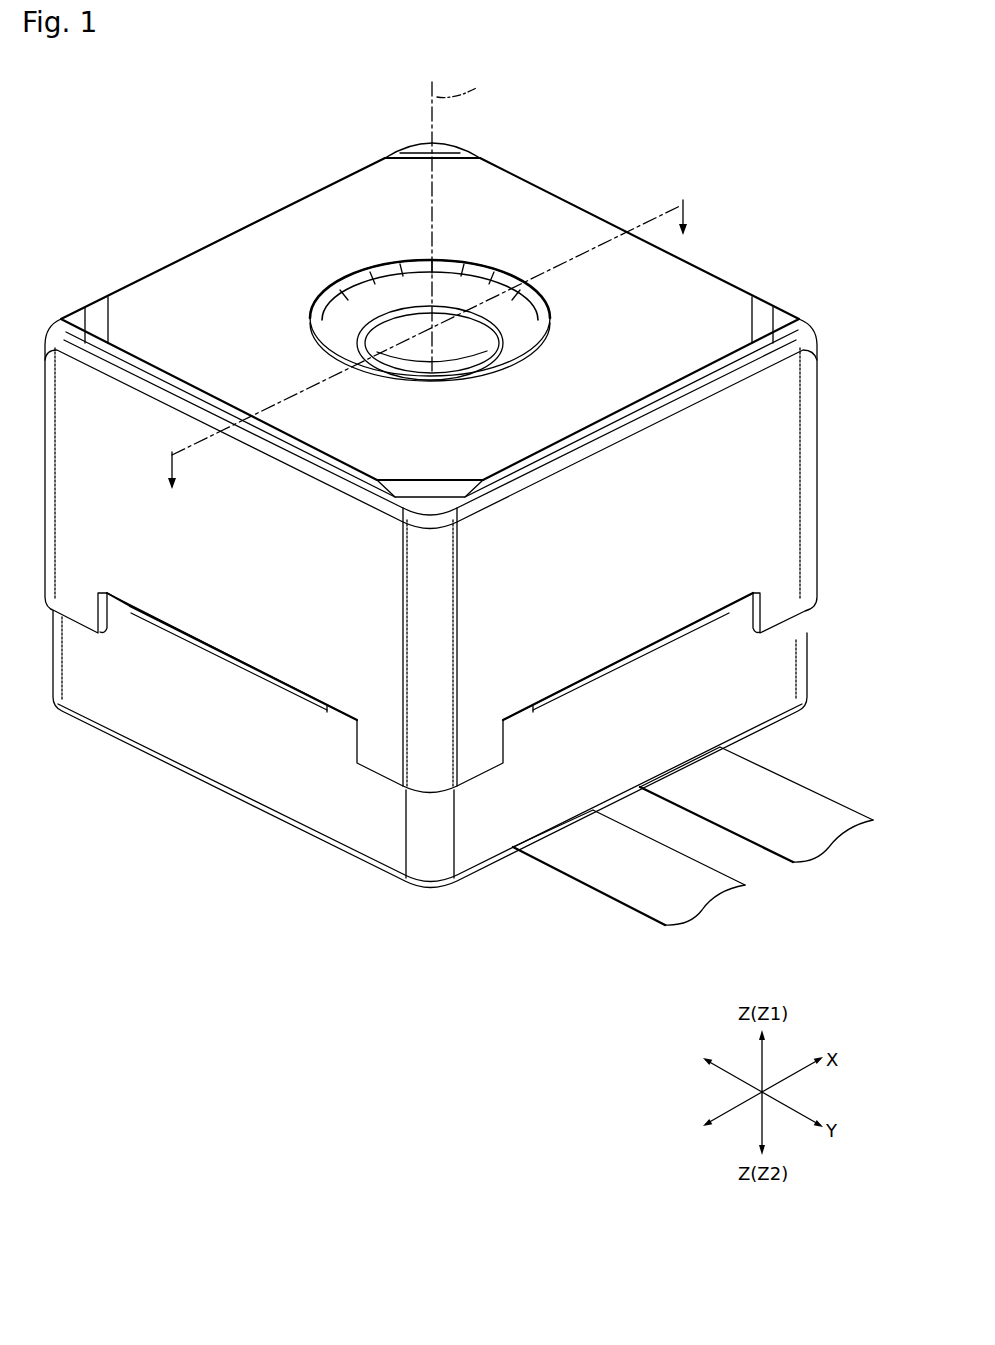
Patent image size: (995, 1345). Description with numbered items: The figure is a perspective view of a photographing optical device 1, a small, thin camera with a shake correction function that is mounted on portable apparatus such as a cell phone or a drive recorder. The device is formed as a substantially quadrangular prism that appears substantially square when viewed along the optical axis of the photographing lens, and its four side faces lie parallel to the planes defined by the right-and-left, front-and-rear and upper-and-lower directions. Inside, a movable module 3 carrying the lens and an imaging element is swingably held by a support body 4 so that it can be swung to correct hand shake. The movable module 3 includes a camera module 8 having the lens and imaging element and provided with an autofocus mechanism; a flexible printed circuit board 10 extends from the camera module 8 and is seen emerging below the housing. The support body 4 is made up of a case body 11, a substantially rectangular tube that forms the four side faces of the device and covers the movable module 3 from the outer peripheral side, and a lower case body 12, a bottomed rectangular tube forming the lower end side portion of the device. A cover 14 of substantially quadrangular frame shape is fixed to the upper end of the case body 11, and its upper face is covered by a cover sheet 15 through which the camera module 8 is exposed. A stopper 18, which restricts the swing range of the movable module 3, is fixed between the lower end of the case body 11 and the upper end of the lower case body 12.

The photographing optical device 1 is at (459, 506).
The movable module 3 is at (430, 254).
The camera module 8 is at (362, 303).
The support body 4 is at (430, 759).
The case body 11 is at (430, 759).
The flexible printed circuit board 10 is at (600, 892).
The lower case body 12 is at (168, 760).
The cover 14 is at (431, 468).
The cover sheet 15 is at (193, 253).
The stopper 18 is at (215, 660).